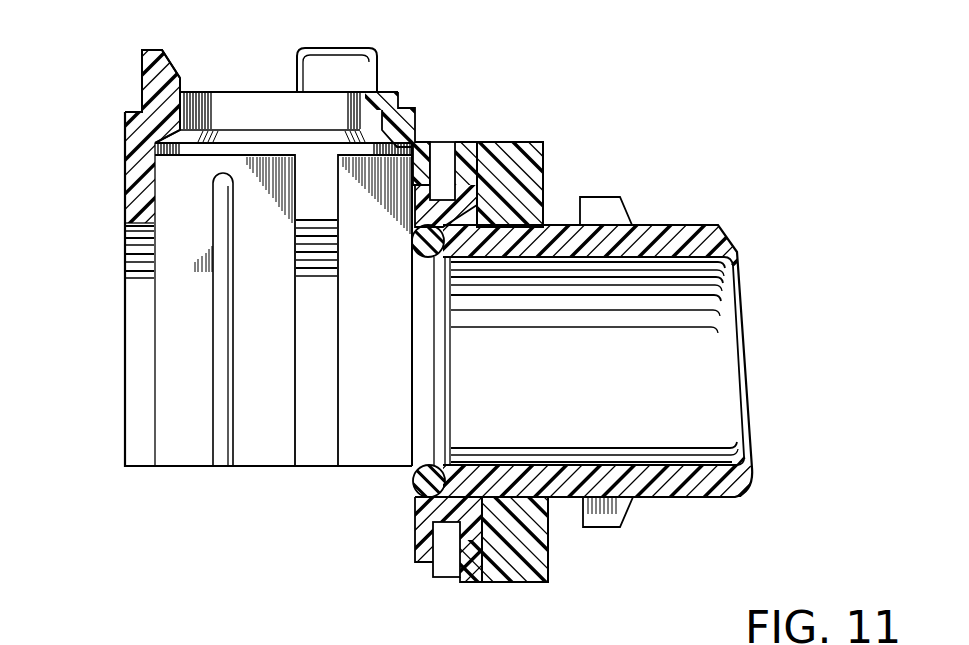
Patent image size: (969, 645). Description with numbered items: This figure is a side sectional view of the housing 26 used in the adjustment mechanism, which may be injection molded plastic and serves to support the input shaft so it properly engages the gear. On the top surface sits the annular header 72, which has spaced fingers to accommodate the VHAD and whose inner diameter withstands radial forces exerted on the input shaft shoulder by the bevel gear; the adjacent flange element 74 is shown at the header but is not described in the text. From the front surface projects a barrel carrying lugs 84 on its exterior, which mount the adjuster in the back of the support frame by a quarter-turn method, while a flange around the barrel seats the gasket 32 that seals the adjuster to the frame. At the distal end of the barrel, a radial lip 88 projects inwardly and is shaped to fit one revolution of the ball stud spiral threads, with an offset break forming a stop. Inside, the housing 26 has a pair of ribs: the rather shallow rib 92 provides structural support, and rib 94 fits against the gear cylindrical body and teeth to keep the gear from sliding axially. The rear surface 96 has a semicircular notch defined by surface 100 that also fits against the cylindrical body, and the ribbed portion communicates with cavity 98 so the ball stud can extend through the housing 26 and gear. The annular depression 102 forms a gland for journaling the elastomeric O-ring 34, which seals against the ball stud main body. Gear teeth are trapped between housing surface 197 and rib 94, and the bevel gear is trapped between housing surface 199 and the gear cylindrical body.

The housing 26 is at (652, 500).
The gasket 32 is at (535, 150).
The O-ring 34 is at (415, 485).
The annular header 72 is at (260, 104).
The flange 74 is at (142, 62).
The lug 84 is at (610, 208).
The radial lip 88 is at (737, 305).
The rib 92 is at (222, 452).
The rib 94 is at (313, 450).
The rear surface 96 is at (125, 177).
The cavity 98 is at (720, 405).
The notch surface 100 is at (138, 398).
The annular depression 102 is at (453, 493).
The housing surface 197 is at (413, 200).
The housing surface 199 is at (153, 110).